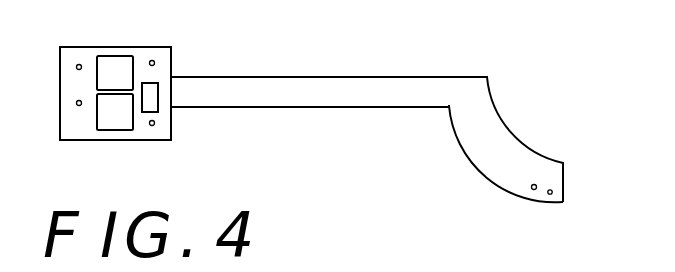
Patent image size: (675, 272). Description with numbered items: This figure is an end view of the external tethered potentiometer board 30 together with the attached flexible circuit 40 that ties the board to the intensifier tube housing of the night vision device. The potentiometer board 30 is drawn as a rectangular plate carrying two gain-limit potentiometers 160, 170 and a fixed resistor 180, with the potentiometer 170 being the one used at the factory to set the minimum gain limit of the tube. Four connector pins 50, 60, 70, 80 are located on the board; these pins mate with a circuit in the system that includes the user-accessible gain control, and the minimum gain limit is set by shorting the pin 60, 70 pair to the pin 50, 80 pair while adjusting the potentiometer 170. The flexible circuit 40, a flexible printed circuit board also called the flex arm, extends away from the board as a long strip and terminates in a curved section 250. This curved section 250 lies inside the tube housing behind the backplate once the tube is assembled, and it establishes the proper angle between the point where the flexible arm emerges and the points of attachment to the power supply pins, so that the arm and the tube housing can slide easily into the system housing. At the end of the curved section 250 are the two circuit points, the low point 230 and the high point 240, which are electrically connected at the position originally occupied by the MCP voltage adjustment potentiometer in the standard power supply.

The potentiometer board 30 is at (85, 47).
The flexible circuit 40 is at (357, 95).
The connector pin 50 is at (153, 126).
The connector pin 60 is at (155, 63).
The connector pin 70 is at (76, 67).
The connector pin 80 is at (76, 103).
The gain-limit potentiometer 160 is at (113, 127).
The gain-limit potentiometer 170 is at (123, 62).
The fixed resistor 180 is at (152, 103).
The low point 230 is at (531, 189).
The high point 240 is at (553, 191).
The curved section 250 is at (468, 160).